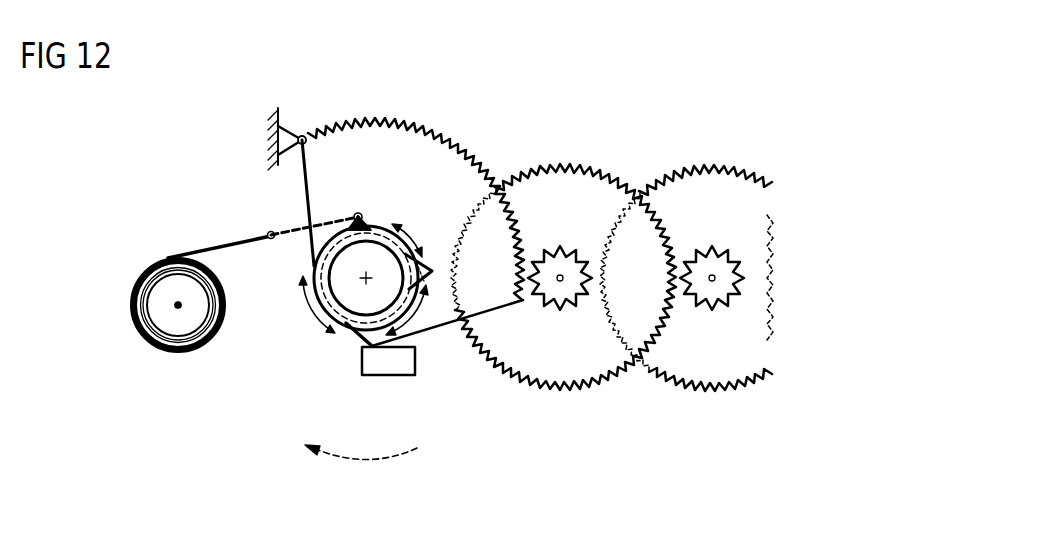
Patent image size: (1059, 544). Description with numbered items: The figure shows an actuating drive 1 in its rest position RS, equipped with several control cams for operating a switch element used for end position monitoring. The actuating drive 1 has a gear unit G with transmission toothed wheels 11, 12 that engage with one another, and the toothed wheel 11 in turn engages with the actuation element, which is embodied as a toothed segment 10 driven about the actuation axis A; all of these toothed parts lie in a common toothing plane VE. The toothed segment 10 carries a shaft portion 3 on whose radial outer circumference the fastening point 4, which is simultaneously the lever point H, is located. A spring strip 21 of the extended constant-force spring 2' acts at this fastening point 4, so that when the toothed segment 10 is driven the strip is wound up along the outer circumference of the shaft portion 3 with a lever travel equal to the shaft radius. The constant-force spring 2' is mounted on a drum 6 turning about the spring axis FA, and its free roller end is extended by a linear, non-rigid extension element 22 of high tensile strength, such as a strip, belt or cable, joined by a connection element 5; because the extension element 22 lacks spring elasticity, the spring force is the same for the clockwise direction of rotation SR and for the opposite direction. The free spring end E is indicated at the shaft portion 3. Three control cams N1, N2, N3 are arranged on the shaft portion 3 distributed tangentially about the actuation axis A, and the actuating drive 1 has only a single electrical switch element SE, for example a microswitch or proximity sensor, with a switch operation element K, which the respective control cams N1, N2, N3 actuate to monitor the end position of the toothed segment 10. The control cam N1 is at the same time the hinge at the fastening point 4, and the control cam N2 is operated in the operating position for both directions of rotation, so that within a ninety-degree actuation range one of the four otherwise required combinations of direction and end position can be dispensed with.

The actuating drive 1 is at (795, 137).
The extended constant-force spring 2' is at (186, 334).
The shaft portion 3 is at (315, 268).
The fastening point 4 is at (361, 215).
The connection element 5 is at (270, 231).
The drum 6 is at (177, 337).
The toothed segment 10 is at (470, 153).
The transmission toothed wheel 11 is at (537, 165).
The transmission toothed wheel 12 is at (715, 165).
The spring strip 21 is at (232, 243).
The extension element 22 is at (288, 230).
The actuation axis A is at (366, 284).
The spring end E is at (356, 213).
The spring axis FA is at (176, 311).
The gear unit G is at (632, 145).
The lever point H is at (359, 223).
The switch operation element K is at (373, 347).
The control cam N1 is at (368, 217).
The control cam N2 is at (420, 268).
The control cam N3 is at (370, 333).
The rest position RS is at (295, 130).
The electrical switch element SE is at (416, 374).
The first actuation direction SR is at (361, 445).
The toothing plane VE is at (500, 289).